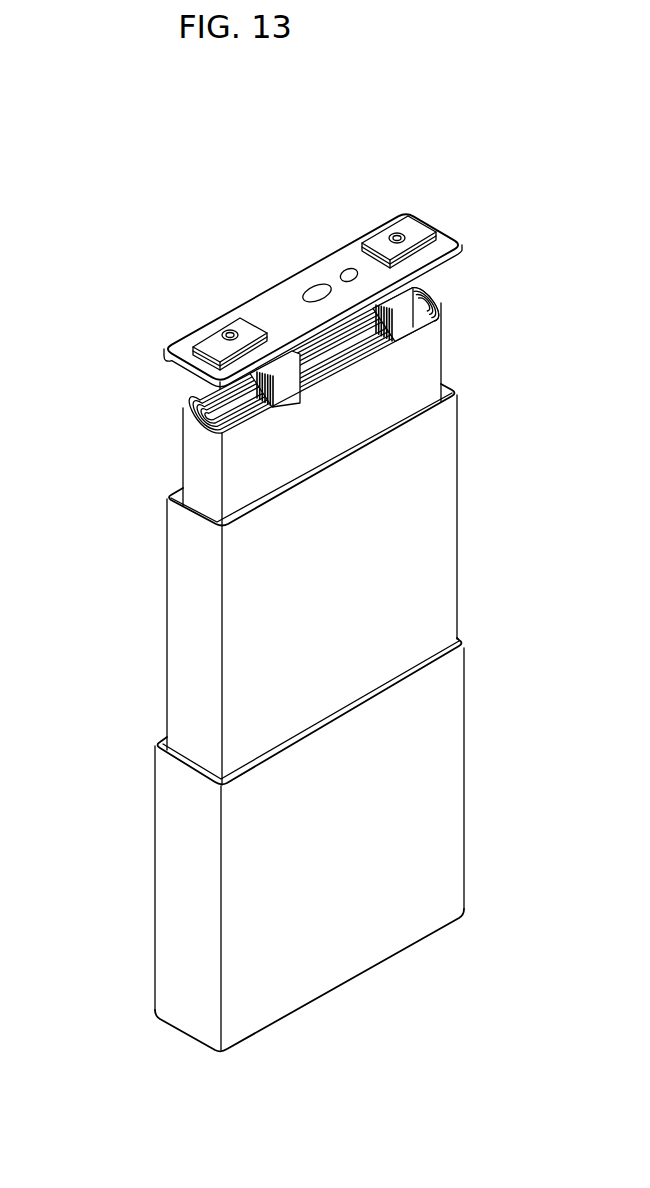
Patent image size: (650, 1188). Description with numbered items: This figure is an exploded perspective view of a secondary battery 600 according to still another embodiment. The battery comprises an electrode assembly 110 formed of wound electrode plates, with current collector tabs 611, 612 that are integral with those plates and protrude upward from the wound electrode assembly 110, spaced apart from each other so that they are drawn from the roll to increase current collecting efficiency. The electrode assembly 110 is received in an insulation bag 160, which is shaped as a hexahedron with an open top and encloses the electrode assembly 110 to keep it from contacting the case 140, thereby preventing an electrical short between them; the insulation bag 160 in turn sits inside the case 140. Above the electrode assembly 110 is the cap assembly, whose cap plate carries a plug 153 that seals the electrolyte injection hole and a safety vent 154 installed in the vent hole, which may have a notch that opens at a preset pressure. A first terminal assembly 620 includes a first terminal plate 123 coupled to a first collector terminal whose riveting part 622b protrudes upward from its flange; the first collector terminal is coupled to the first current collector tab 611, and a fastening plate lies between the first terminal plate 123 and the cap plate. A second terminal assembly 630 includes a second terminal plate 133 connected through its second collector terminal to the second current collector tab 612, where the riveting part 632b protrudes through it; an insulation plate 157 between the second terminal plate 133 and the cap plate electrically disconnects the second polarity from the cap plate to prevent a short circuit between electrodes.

The secondary battery 600 is at (34, 171).
The electrode assembly 110 is at (450, 351).
The first current collector tab 611 is at (288, 402).
The second current collector tab 612 is at (412, 311).
The insulation bag 160 is at (456, 552).
The case 140 is at (450, 802).
The insulation plate 157 is at (437, 236).
The plug 153 is at (346, 269).
The safety vent 154 is at (312, 288).
The first terminal assembly 620 is at (195, 300).
The first terminal plate 123 is at (208, 338).
The riveting part 622b is at (231, 331).
The second terminal assembly 630 is at (426, 194).
The second terminal plate 133 is at (384, 234).
The second terminal hole 632b is at (398, 233).